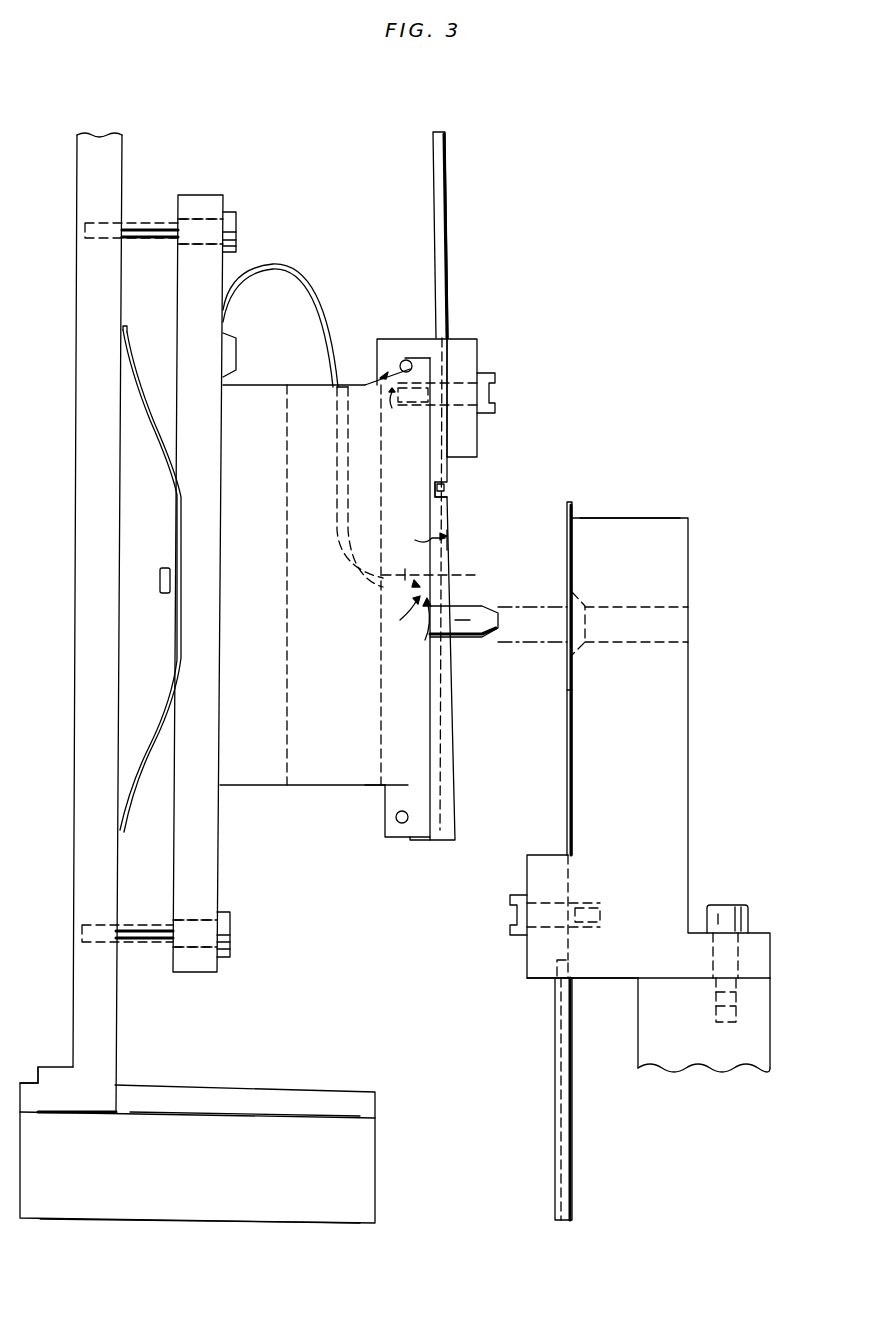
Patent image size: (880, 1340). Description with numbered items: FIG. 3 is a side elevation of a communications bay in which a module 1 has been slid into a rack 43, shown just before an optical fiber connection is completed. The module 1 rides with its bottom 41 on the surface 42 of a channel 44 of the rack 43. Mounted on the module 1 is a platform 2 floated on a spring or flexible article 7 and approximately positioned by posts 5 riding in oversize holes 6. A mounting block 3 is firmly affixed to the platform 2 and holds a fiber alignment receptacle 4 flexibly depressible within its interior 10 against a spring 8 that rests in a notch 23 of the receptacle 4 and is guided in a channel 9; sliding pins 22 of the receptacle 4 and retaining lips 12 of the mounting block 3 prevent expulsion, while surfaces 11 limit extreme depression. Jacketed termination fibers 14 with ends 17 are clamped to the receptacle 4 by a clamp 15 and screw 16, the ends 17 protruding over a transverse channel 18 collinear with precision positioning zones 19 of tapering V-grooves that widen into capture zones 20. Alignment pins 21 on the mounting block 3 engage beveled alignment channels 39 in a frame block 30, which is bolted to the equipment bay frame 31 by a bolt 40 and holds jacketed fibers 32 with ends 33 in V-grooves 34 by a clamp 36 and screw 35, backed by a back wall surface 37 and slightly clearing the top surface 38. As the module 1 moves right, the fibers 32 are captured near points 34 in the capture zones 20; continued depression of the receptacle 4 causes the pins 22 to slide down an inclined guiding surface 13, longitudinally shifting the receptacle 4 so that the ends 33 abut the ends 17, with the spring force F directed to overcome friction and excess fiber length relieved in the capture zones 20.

The communications module 1 is at (125, 157).
The platform 2 is at (196, 195).
The mounting block 3 is at (258, 385).
The fiber alignment receptacle 4 is at (456, 752).
The posts 5 is at (236, 222).
The oversize holes 6 is at (200, 215).
The spring or flexible article 7 is at (128, 385).
The spring 8 is at (283, 267).
The channel 9 is at (308, 385).
The interior 10 is at (368, 786).
The surfaces 11 is at (347, 383).
The retaining lips 12 is at (430, 340).
The inclined guiding surface 13 is at (386, 372).
The jacketed optical termination fibers 14 is at (447, 162).
The clamp 15 is at (463, 339).
The screw 16 is at (495, 385).
The termination fiber ends 17 is at (448, 485).
The transverse channel 18 is at (448, 493).
The precision positioning zones 19 is at (450, 545).
The capture zones 20 is at (448, 822).
The alignment pins 21 is at (483, 640).
The sliding pins 22 is at (406, 360).
The notch 23 is at (443, 577).
The frame block 30 is at (692, 712).
The frame 31 is at (700, 1066).
The jacketed optical fibers 32 is at (555, 1106).
The fiber ends 33 is at (571, 500).
The V-grooves 34 is at (565, 856).
The screw 35 is at (510, 902).
The clamp 36 is at (527, 964).
The back wall surface 37 is at (574, 694).
The top surface 38 is at (632, 518).
The alignment channels 39 is at (560, 641).
The bolt 40 is at (727, 905).
The bottom 41 is at (82, 1087).
The surface 42 is at (245, 1112).
The rack 43 is at (237, 1210).
The channel 44 is at (332, 1100).
The spring force F is at (422, 633).